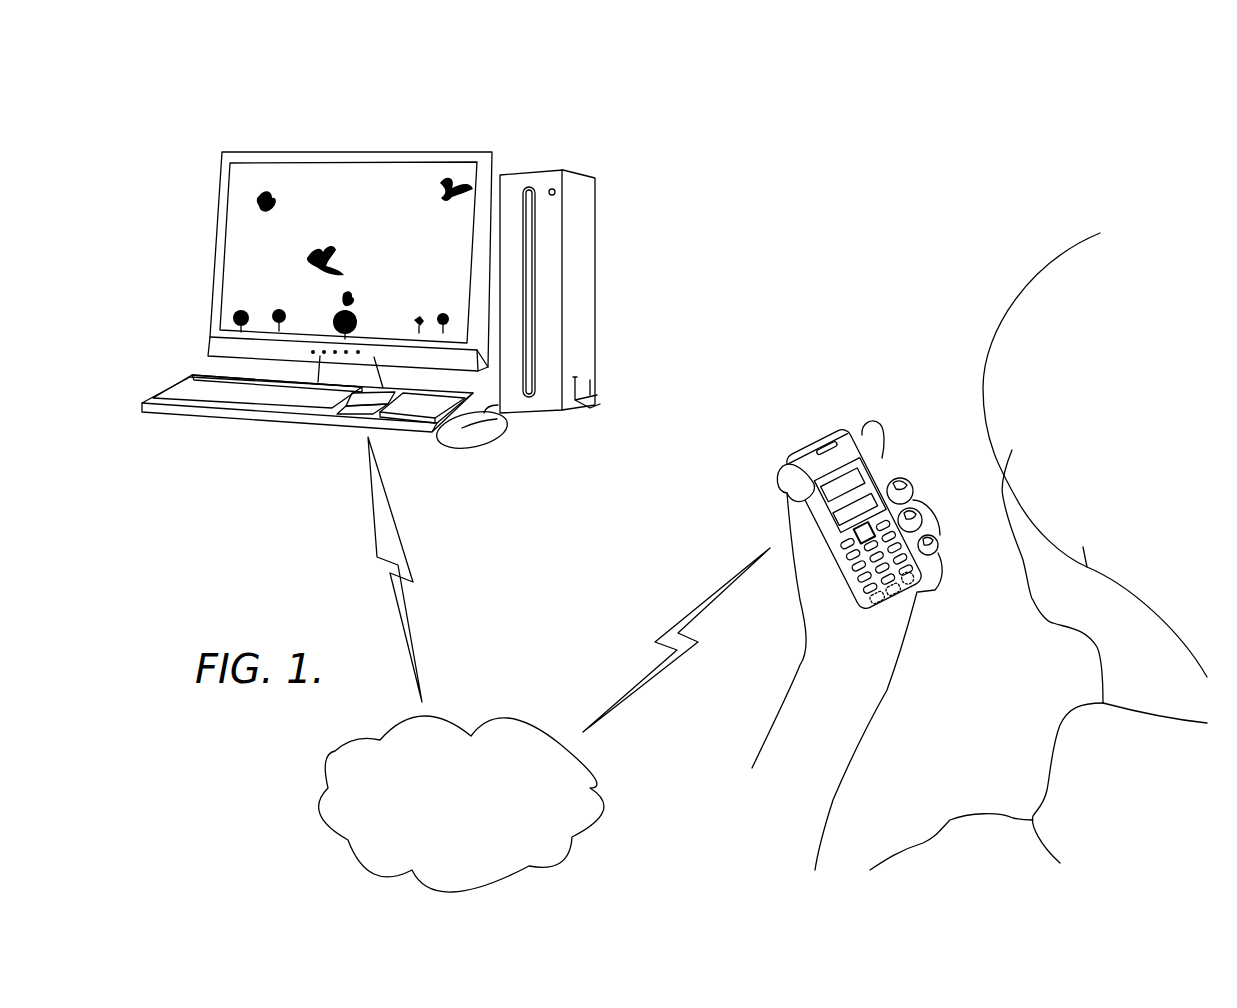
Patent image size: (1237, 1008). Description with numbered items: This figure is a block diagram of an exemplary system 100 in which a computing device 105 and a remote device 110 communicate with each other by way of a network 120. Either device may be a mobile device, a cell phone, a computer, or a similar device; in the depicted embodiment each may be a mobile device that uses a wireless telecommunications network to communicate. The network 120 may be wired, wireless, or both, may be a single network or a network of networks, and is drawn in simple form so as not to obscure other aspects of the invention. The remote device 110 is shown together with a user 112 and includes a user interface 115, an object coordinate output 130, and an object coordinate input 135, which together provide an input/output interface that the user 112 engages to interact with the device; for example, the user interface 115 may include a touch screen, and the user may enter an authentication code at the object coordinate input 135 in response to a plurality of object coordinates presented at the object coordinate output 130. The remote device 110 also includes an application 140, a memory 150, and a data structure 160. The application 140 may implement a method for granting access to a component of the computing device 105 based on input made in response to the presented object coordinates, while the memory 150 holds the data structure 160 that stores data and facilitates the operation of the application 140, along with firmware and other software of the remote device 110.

The system 100 is at (136, 77).
The computing device 105 is at (398, 150).
The remote device 110 is at (807, 422).
The user 112 is at (966, 377).
The user interface 115 is at (882, 467).
The network 120 is at (510, 716).
The object coordinate output 130 is at (788, 496).
The object coordinate input 135 is at (822, 520).
The application 140 is at (915, 585).
The memory 150 is at (902, 596).
The data structure 160 is at (878, 602).